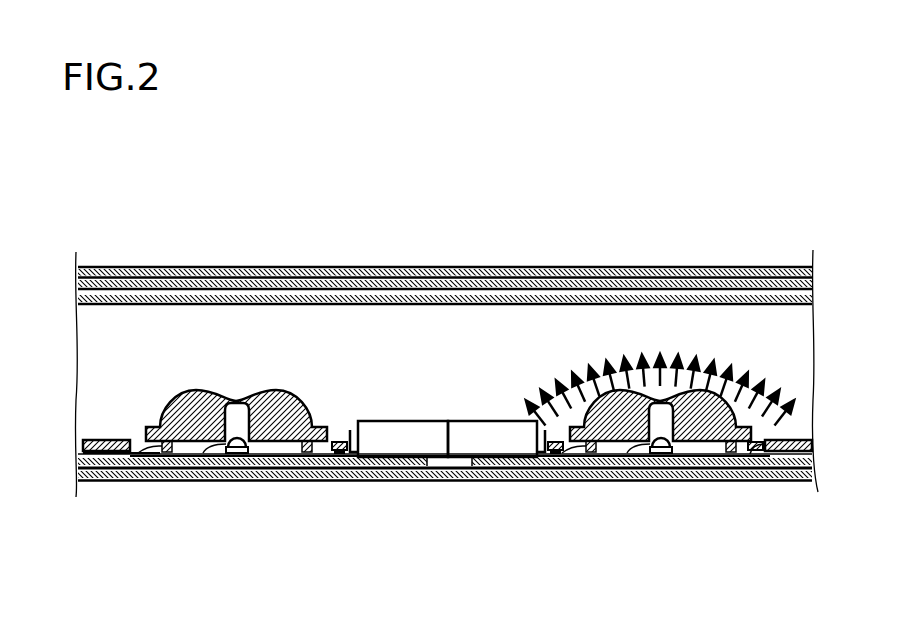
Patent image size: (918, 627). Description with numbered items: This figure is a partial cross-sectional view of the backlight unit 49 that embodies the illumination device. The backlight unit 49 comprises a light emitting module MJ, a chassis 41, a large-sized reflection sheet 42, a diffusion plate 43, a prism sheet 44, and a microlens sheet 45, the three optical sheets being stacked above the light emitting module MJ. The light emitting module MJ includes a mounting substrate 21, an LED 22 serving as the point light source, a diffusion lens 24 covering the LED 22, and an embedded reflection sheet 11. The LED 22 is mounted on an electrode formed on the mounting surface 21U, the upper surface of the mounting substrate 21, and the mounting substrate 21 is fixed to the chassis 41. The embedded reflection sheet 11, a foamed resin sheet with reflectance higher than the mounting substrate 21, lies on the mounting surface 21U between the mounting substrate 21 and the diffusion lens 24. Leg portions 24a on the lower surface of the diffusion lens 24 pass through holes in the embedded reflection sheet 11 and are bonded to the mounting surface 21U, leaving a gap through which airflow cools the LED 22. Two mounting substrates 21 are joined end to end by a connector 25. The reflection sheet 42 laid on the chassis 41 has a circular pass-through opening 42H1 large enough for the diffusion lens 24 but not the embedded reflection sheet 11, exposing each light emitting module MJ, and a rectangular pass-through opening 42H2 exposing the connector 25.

The backlight unit 49 is at (170, 225).
The microlens sheet 45 is at (751, 268).
The prism sheet 44 is at (681, 281).
The diffusion plate 43 is at (612, 297).
The mounting substrate 21 is at (290, 484).
The mounting surface 21U is at (112, 438).
The chassis 41 is at (432, 481).
The embedded reflection sheet 11 is at (792, 448).
The diffusion lens 24 is at (196, 390).
The light emitting module MJ is at (237, 388).
The leg portions 24a is at (131, 443).
The LED 22 is at (217, 443).
The reflection sheet 42 is at (347, 438).
The rectangular pass-through opening 42H2 is at (537, 450).
The circular pass-through opening 42H1 is at (750, 450).
The connector 25 is at (432, 420).